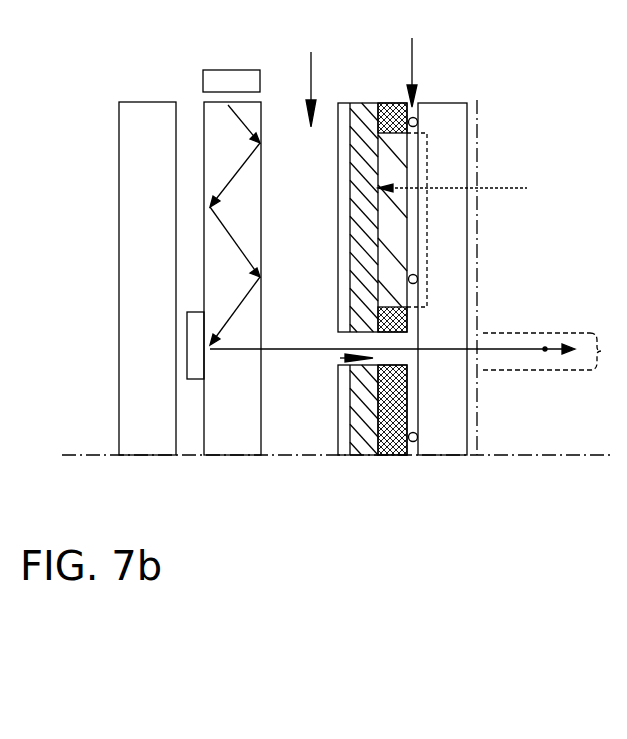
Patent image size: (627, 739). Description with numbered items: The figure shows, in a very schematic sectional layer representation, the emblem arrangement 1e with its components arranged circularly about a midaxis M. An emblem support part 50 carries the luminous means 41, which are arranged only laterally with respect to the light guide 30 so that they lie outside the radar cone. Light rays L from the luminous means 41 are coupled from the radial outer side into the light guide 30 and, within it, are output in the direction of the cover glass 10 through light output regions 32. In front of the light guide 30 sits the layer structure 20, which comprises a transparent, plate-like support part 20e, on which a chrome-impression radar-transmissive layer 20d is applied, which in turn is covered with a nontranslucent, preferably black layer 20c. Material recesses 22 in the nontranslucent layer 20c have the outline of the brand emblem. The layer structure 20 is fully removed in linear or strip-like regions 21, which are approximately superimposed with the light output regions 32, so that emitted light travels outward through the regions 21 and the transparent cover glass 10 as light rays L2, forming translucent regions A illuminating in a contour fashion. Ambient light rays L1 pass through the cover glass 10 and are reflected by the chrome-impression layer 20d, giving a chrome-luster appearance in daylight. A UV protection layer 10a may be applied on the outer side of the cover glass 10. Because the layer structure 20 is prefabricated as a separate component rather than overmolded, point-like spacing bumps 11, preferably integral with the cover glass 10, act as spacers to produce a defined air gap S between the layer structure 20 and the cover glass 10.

The emblem arrangement 1e is at (496, 77).
The cover glass 10 is at (463, 450).
The UV protection layer 10a is at (475, 412).
The spacing bumps 11 is at (440, 279).
The layer structure 20 is at (407, 100).
The nontranslucent layer 20c is at (400, 449).
The chrome-impression layer 20d is at (365, 449).
The support part 20e is at (344, 449).
The regions 21 is at (340, 358).
The material recesses 22 is at (428, 165).
The light guide 30 is at (247, 448).
The light output regions 32 is at (196, 373).
The luminous means 41 is at (230, 79).
The emblem support part 50 is at (127, 448).
The translucent regions A is at (416, 351).
The light rays L is at (242, 166).
The light rays L1 is at (512, 188).
The light rays L2 is at (545, 349).
The midaxis M is at (552, 455).
The air gaps S is at (361, 70).